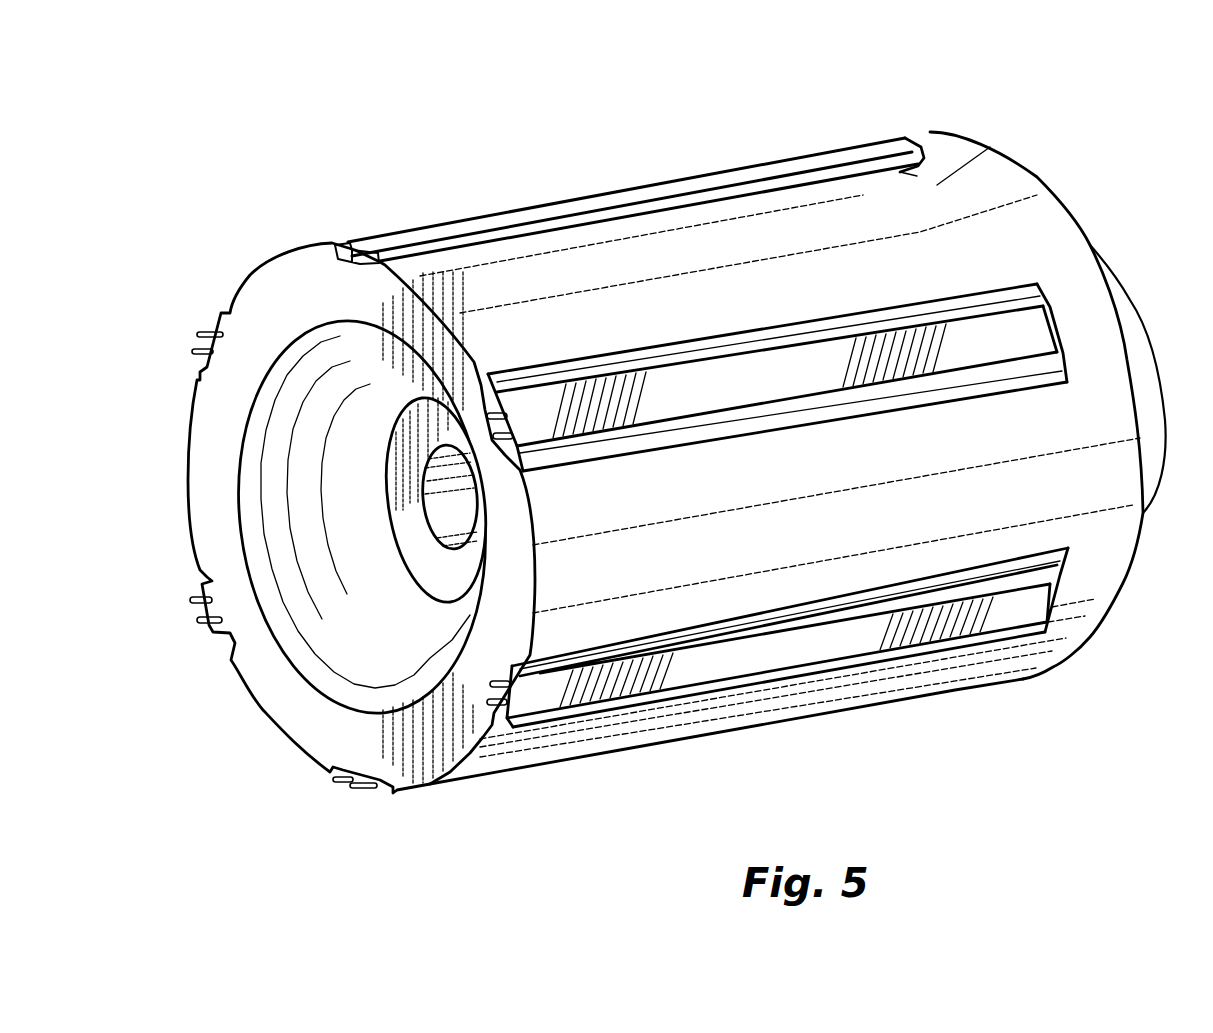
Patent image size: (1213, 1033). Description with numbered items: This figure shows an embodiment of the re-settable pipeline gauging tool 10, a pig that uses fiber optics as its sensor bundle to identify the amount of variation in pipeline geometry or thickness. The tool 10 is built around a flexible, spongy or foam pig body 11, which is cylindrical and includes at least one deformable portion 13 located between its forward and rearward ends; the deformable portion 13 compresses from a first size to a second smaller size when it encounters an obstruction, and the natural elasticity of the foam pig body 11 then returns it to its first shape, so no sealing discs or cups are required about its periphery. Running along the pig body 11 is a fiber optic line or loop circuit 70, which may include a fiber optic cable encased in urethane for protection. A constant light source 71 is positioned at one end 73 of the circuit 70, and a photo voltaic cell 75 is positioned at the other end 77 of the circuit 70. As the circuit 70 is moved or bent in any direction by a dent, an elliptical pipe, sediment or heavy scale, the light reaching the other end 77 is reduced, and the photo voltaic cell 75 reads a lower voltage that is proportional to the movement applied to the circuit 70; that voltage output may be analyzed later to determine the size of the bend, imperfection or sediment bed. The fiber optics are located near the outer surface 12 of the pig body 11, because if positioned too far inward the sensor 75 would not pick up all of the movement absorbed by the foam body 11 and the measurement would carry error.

The re-settable pipeline gauging tool 10 is at (1052, 156).
The pig body 11 is at (1120, 590).
The outer surface 12 is at (1020, 228).
The deformable portion 13 is at (600, 752).
The fiber optic line or loop circuit 70 is at (581, 186).
The constant light source 71 is at (340, 257).
The one end of the circuit 73 is at (365, 242).
The photo voltaic cell 75 is at (913, 168).
The other end of the circuit 77 is at (893, 151).